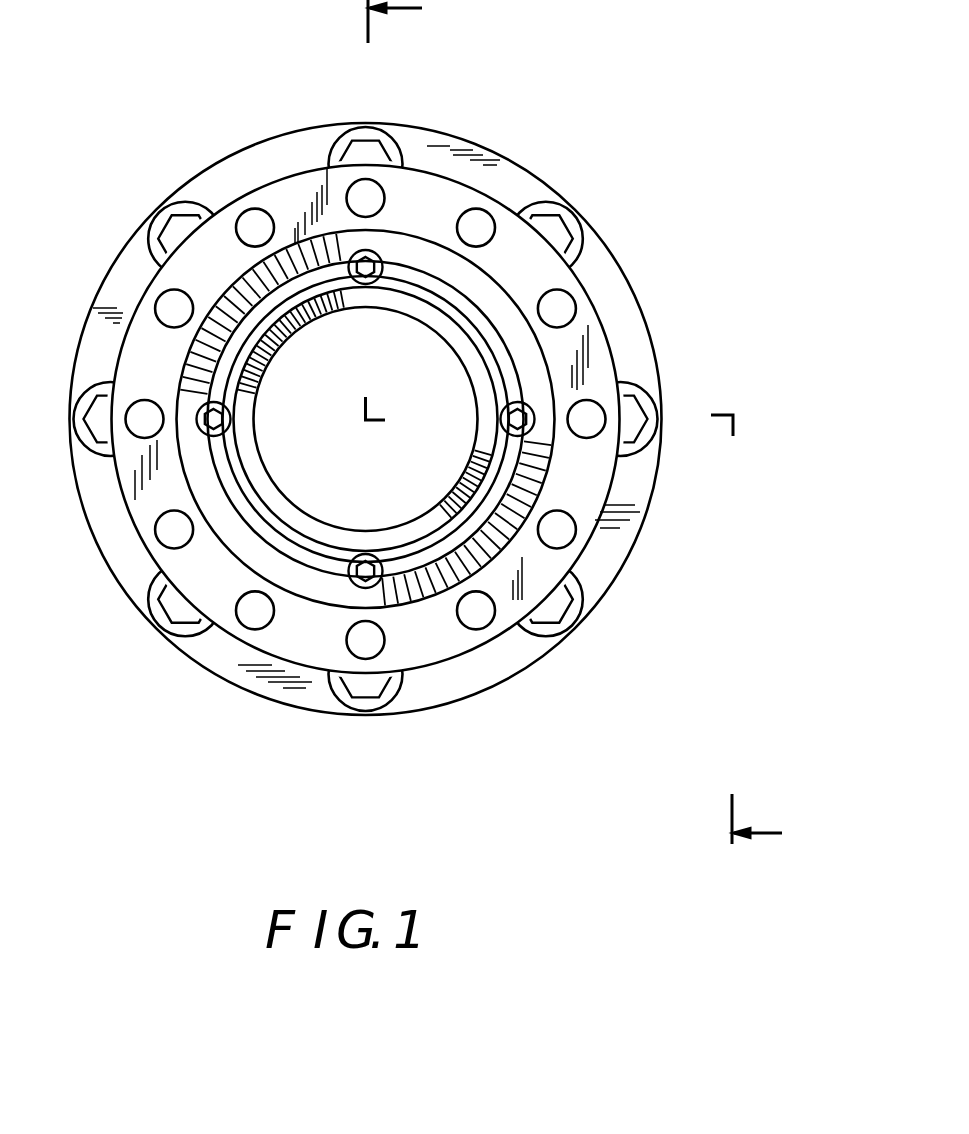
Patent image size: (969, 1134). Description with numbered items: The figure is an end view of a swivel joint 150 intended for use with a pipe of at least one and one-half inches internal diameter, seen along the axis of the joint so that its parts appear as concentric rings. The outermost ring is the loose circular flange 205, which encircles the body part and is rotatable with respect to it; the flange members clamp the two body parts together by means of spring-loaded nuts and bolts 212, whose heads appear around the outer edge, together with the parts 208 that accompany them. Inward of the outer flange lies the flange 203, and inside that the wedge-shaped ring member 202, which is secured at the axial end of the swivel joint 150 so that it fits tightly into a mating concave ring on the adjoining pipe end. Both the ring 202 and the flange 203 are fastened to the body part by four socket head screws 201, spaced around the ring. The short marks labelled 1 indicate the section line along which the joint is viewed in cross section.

The swivel joint 150 is at (100, 595).
The socket head screws 201 is at (499, 417).
The wedge-shaped ring members 202 is at (417, 610).
The flanges 203 is at (232, 640).
The loose circular flange 205 is at (537, 658).
The washer 208 is at (178, 641).
The bolts 212 is at (350, 697).
The section line 1- 1 is at (591, 427).